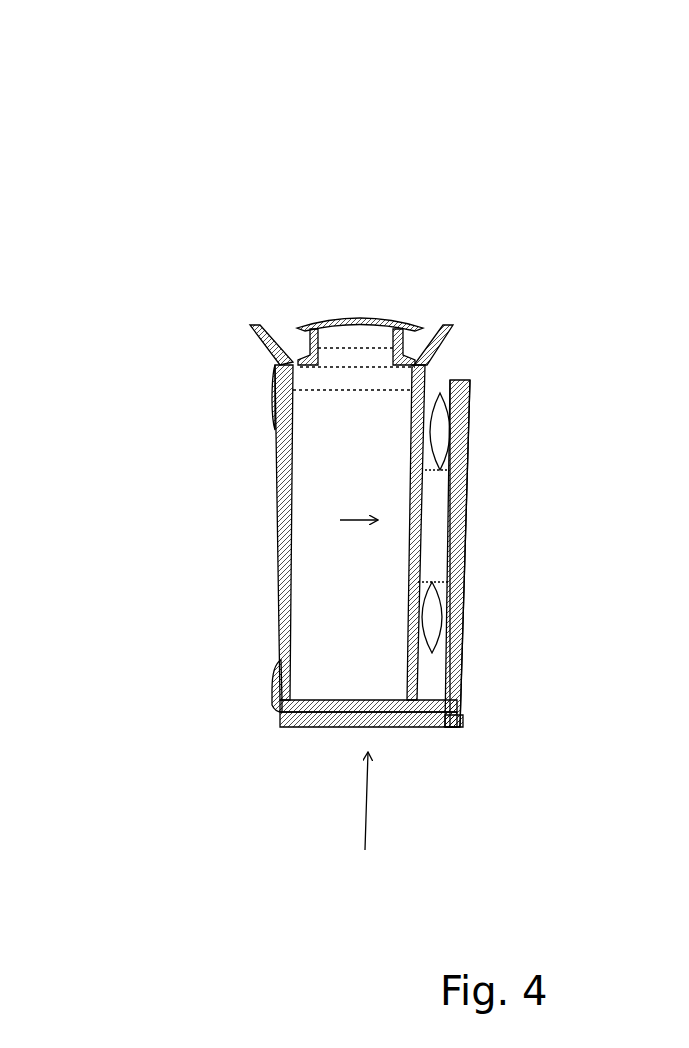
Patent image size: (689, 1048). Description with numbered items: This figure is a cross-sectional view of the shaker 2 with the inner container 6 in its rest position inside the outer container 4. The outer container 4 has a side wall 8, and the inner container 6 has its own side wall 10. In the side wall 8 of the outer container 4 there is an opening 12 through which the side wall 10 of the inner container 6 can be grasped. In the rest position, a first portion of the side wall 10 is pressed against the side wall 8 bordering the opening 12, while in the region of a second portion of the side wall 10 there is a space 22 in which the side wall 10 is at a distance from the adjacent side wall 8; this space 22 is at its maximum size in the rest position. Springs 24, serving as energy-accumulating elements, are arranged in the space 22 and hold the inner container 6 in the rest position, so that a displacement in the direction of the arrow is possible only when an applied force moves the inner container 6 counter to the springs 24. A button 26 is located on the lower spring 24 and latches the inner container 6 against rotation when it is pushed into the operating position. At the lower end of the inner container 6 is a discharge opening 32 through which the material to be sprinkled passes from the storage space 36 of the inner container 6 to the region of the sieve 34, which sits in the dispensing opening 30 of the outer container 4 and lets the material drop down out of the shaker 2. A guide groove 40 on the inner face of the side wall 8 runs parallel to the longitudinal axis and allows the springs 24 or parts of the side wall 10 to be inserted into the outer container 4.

The shaker 2 is at (248, 117).
The outer container 4 is at (463, 517).
The inner container 6 is at (413, 567).
The side wall 8 is at (275, 410).
The side wall 10 is at (283, 520).
The opening 12 is at (207, 540).
The space 22 is at (430, 680).
The springs 24 is at (470, 392).
The button 26 is at (458, 617).
The dispensing opening 30 is at (365, 826).
The discharge opening 32 is at (332, 725).
The sieve 34 is at (393, 715).
The storage space 36 is at (356, 474).
The guide groove 40 is at (455, 475).